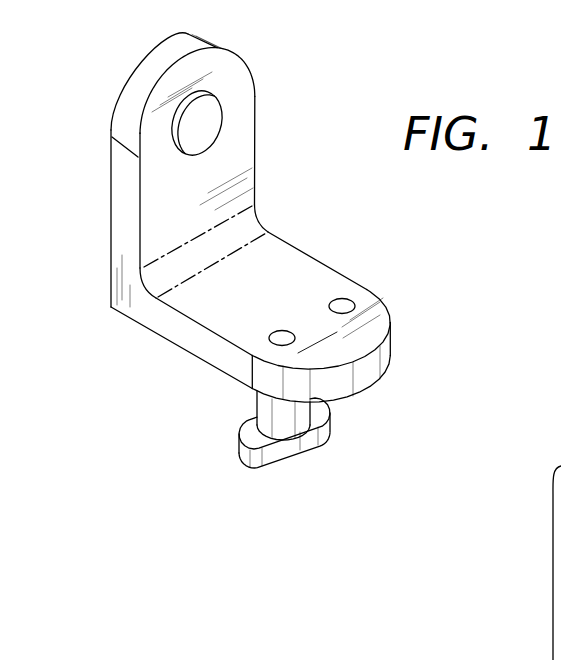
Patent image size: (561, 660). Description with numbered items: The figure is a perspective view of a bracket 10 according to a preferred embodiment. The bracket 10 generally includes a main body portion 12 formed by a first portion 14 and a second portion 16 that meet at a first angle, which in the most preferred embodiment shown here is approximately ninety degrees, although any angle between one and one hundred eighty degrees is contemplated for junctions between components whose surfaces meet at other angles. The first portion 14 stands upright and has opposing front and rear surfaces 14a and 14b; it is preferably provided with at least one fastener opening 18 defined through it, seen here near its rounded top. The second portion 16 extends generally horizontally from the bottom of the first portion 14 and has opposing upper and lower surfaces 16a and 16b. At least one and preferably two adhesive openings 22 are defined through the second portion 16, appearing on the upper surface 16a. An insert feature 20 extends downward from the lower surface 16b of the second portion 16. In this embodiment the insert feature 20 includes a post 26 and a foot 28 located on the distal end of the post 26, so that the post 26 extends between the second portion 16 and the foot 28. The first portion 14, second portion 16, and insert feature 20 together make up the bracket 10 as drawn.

The bracket 10 is at (70, 75).
The main body portion 12 is at (98, 322).
The first portion 14 is at (127, 165).
The front surface 14a is at (237, 146).
The rear surface 14b is at (108, 227).
The second portion 16 is at (313, 281).
The upper surface 16a is at (288, 256).
The lower surface 16b is at (372, 384).
The fastener opening 18 is at (197, 126).
The insert feature 20 is at (212, 445).
The adhesive openings 22 is at (343, 305).
The post 26 is at (299, 416).
The foot 28 is at (258, 463).